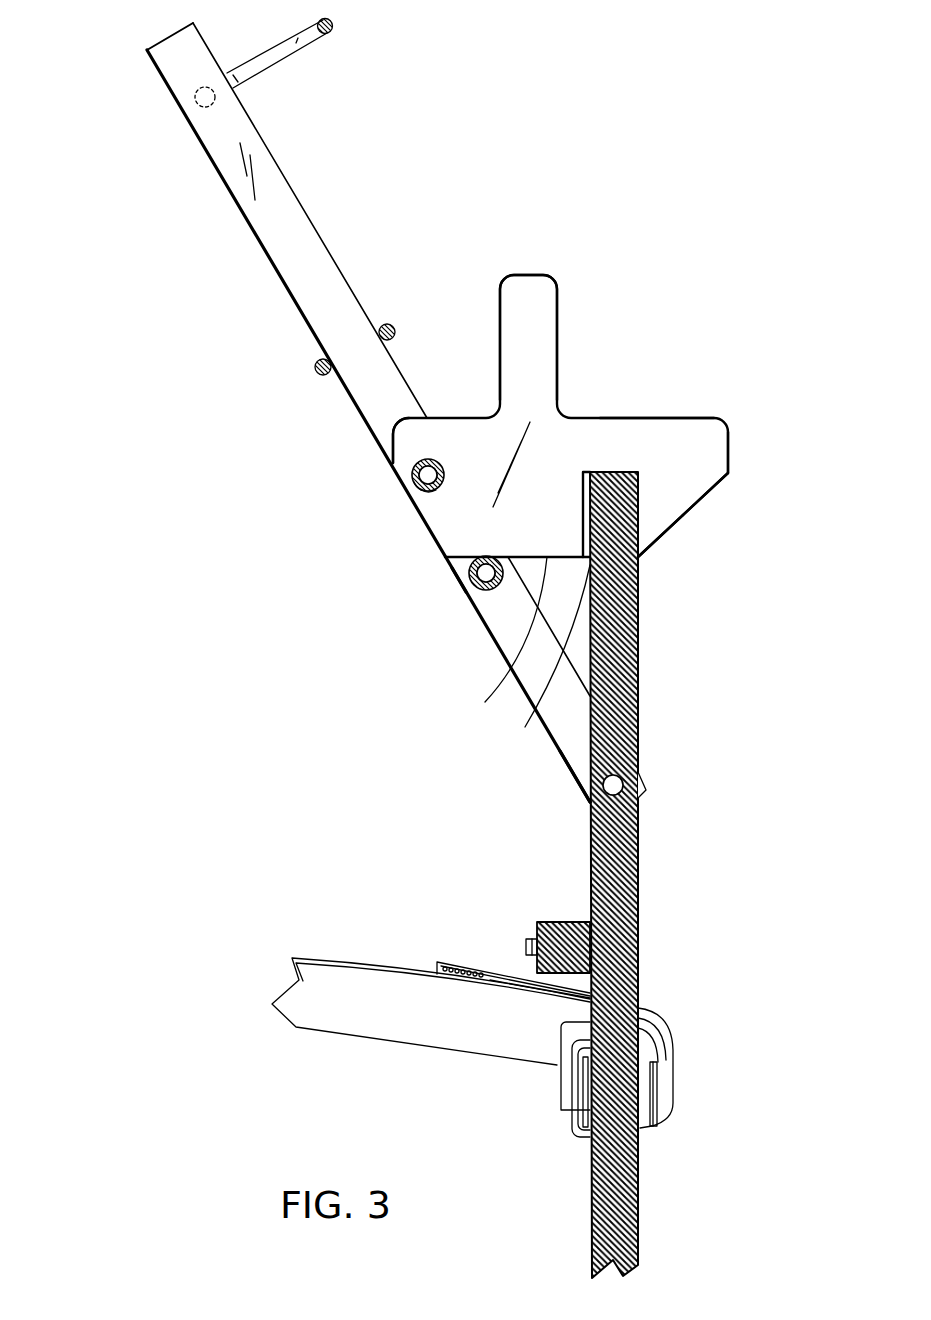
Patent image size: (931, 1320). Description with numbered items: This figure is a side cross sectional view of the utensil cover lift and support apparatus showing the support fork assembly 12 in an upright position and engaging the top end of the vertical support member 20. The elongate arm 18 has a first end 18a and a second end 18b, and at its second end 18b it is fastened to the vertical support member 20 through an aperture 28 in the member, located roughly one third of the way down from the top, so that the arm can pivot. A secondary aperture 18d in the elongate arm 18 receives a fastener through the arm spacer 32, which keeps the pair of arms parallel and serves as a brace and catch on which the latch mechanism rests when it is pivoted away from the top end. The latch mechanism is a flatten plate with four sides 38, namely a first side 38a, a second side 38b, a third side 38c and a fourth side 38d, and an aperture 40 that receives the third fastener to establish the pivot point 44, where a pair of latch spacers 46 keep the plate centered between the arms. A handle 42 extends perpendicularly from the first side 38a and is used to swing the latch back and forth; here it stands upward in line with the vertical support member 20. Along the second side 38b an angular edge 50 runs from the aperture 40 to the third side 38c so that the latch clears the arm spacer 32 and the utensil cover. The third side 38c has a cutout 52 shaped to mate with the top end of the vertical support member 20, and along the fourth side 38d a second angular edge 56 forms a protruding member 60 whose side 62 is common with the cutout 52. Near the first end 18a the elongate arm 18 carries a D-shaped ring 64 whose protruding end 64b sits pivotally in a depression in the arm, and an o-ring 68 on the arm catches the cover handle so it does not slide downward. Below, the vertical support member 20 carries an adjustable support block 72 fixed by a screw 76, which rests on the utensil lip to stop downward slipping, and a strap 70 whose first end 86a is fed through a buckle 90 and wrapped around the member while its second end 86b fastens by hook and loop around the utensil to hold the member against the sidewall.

The support fork assembly 12 is at (323, 428).
The elongate arm 18 is at (323, 428).
The first end of elongate arm 18a is at (150, 57).
The second end of elongate arm 18b is at (578, 788).
The secondary aperture 18d is at (470, 581).
The vertical support member 20 is at (653, 875).
The aperture of vertical support member 28 is at (628, 772).
The arm spacer 32 is at (486, 591).
The sides of flatten plate 38 is at (538, 490).
The first side of flatten plate 38a is at (662, 418).
The second side of flatten plate 38b is at (393, 443).
The third side of flatten plate 38c is at (485, 702).
The fourth side of flatten plate 38d is at (728, 452).
The aperture of latch mechanism 40 is at (428, 459).
The handle 42 is at (530, 276).
The pivot point 44 is at (412, 478).
The latch spacers 46 is at (431, 492).
The angular edge 50 is at (417, 490).
The cutout 52 is at (525, 727).
The second angular edge 56 is at (710, 490).
The protruding member 60 is at (687, 512).
The side of protruding member 62 is at (638, 525).
The D-shaped ring 64 is at (285, 58).
The protruding end of D-shaped ring 64b is at (201, 108).
The o-ring 68 is at (315, 371).
The strap 70 is at (383, 1038).
The adjustable support block 72 is at (557, 922).
The screw 76 is at (526, 944).
The first end of strap 86a is at (560, 1065).
The second end of strap 86b is at (673, 1040).
The buckle 90 is at (570, 1120).